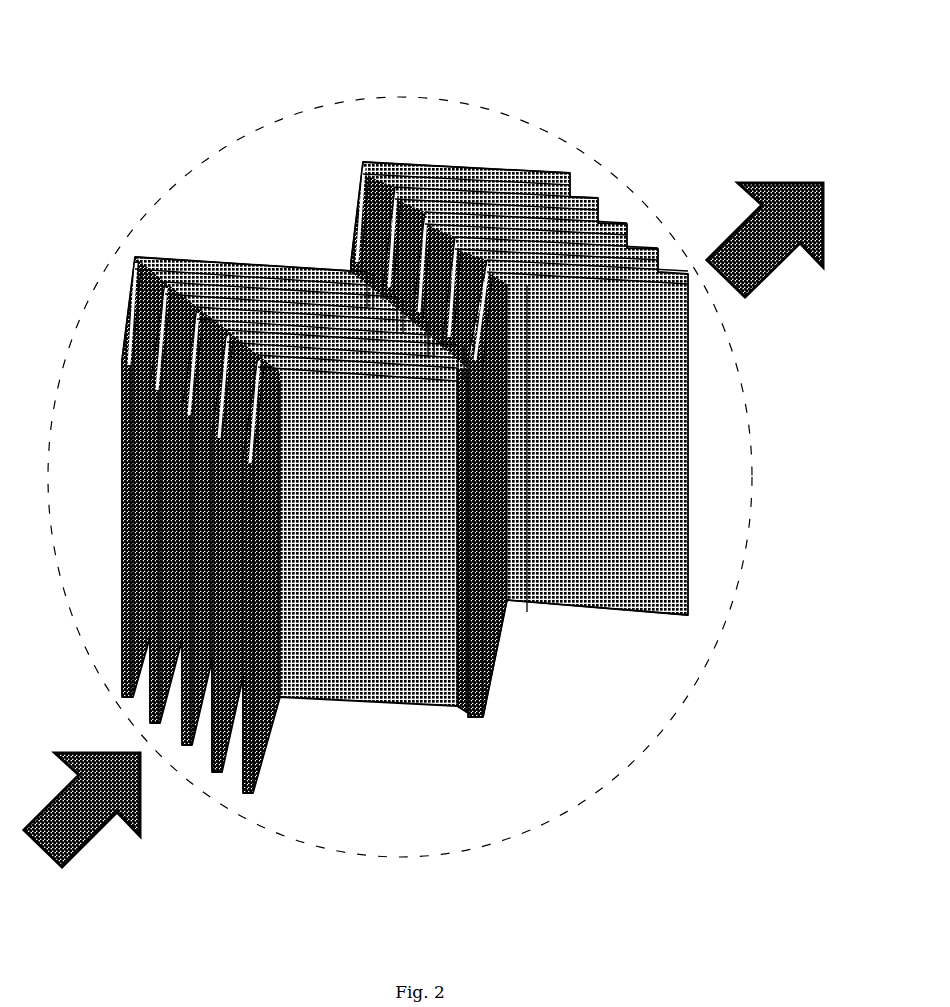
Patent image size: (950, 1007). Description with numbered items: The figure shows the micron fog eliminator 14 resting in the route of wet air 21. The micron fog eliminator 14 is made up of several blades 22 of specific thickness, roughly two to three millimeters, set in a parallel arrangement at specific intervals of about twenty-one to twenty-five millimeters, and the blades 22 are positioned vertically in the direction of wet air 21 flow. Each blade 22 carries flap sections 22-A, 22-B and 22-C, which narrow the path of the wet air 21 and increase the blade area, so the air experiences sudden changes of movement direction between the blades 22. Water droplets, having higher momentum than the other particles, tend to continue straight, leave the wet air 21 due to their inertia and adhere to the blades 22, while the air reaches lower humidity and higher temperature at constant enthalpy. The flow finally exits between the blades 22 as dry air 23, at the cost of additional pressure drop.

The micron fog eliminator 14 is at (533, 830).
The wet air 21 is at (100, 835).
The blades 22 is at (405, 402).
The flap section 22-A is at (145, 250).
The flap section 22-B is at (348, 268).
The flap section 22-C is at (367, 160).
The dry air 23 is at (792, 258).